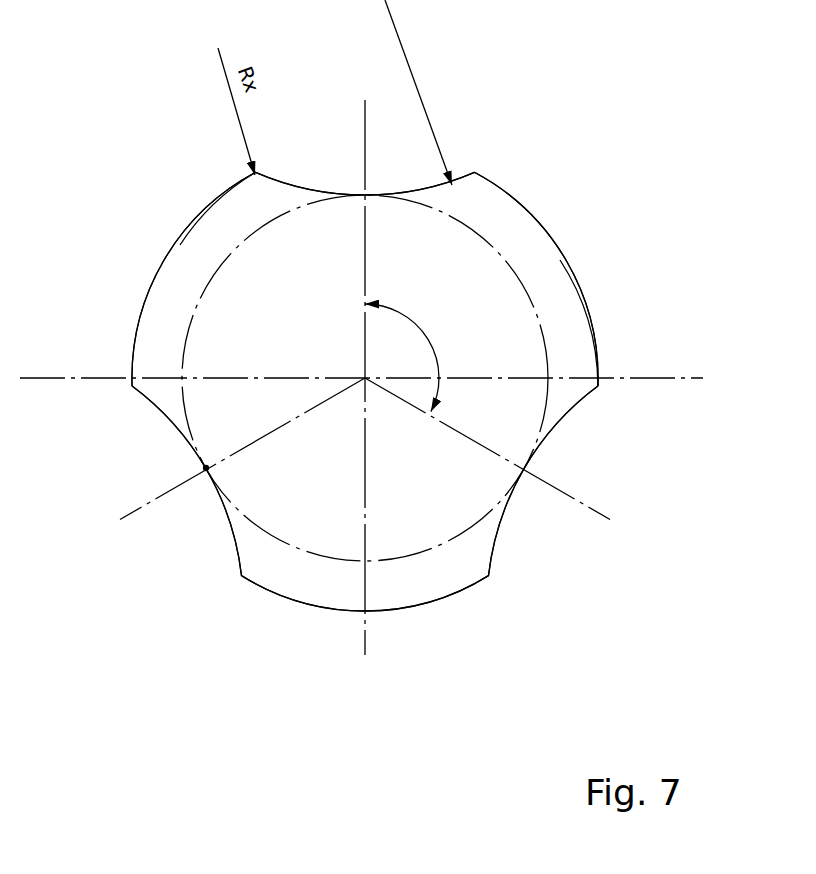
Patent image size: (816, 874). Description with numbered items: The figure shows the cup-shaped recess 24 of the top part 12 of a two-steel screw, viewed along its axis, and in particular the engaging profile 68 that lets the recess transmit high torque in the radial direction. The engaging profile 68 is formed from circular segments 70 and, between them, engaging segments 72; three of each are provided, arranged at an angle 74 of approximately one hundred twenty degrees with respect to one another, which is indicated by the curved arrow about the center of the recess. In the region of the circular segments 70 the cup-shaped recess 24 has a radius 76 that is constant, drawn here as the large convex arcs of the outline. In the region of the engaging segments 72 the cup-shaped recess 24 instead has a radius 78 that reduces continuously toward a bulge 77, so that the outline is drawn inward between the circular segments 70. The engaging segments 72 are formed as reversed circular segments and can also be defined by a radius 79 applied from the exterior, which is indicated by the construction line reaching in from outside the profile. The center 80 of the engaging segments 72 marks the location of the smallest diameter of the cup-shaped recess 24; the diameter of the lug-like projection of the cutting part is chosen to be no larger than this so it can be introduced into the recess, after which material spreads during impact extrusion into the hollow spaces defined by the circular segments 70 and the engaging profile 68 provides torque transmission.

The top part 12 is at (568, 217).
The cup-shaped recess 24 is at (590, 332).
The engaging profile 68 is at (300, 560).
The circular segments 70 is at (152, 285).
The engaging segments 72 is at (309, 190).
The angle 74 is at (411, 358).
The radius 76 is at (163, 260).
The bulge 77 is at (523, 468).
The radius 78 is at (208, 455).
The radius 79 is at (405, 53).
The center 80 is at (206, 468).